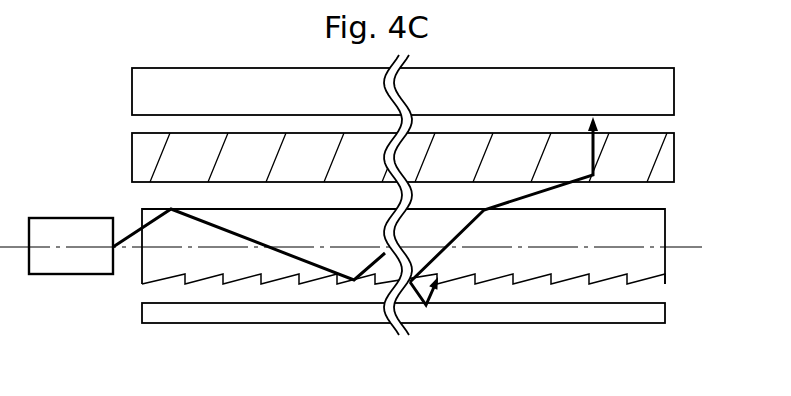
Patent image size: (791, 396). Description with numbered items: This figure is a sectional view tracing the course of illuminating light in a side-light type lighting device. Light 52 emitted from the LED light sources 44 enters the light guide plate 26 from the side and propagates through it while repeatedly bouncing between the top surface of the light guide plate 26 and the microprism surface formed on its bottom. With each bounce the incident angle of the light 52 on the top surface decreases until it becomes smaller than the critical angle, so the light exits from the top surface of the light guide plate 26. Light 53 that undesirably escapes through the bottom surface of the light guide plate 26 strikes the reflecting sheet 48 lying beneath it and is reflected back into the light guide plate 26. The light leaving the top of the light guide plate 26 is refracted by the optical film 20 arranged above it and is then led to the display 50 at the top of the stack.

The optical film 20 is at (710, 188).
The light guide plate 26 is at (711, 229).
The LED light sources 44 is at (57, 362).
The reflecting sheet 48 is at (712, 305).
The display 50 is at (712, 106).
The light 52 is at (175, 362).
The light 53 is at (522, 363).